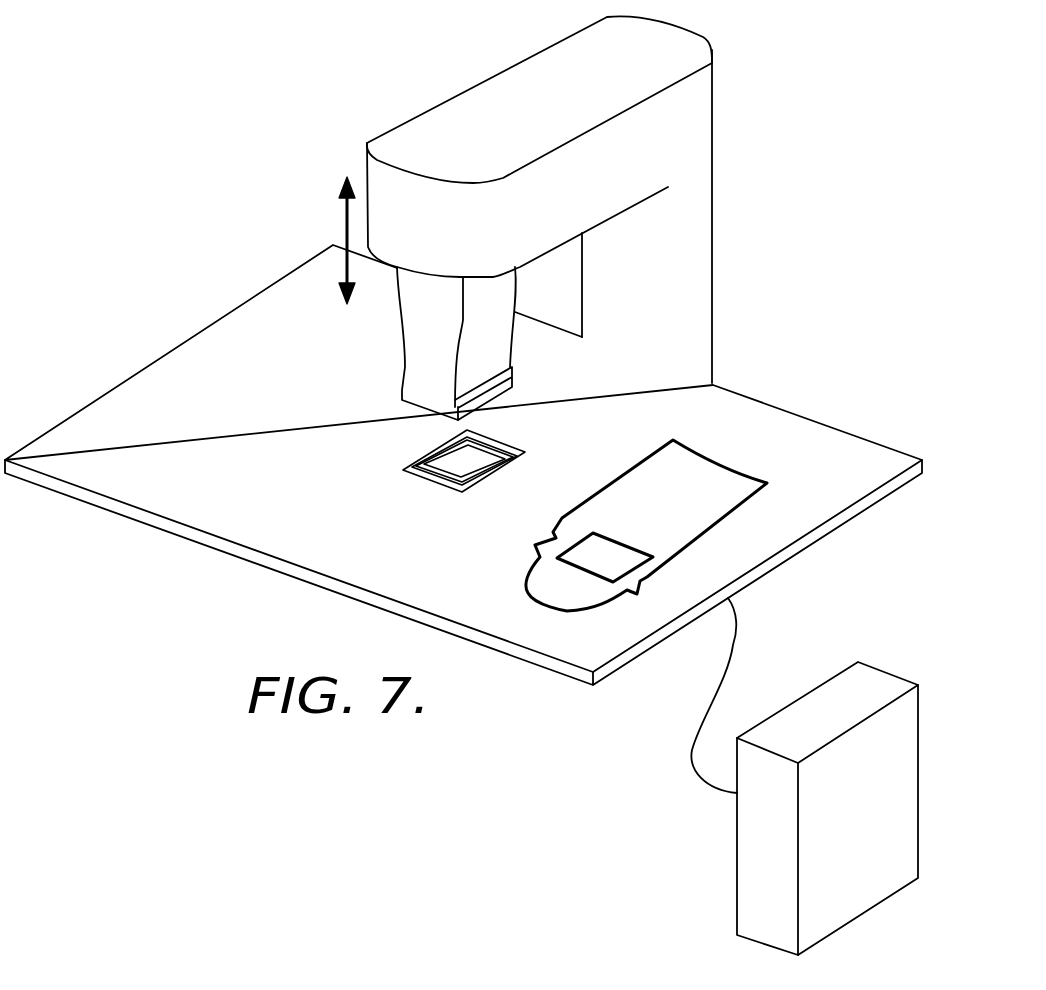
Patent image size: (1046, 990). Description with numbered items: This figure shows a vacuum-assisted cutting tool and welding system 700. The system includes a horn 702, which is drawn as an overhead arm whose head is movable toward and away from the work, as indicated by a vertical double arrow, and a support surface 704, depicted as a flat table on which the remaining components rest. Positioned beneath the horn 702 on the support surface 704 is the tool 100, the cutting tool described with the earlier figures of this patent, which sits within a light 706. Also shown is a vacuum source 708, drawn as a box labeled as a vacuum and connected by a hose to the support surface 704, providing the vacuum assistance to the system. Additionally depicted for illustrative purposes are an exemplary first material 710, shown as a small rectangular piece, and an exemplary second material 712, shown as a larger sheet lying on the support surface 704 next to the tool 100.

The vacuum-assisted cutting tool and welding system 700 is at (150, 200).
The horn 702 is at (423, 312).
The support surface 704 is at (130, 403).
The light 706 is at (476, 448).
The vacuum source 708 is at (852, 682).
The first material 710 is at (586, 546).
The second material 712 is at (700, 470).
The tool 100 is at (462, 466).